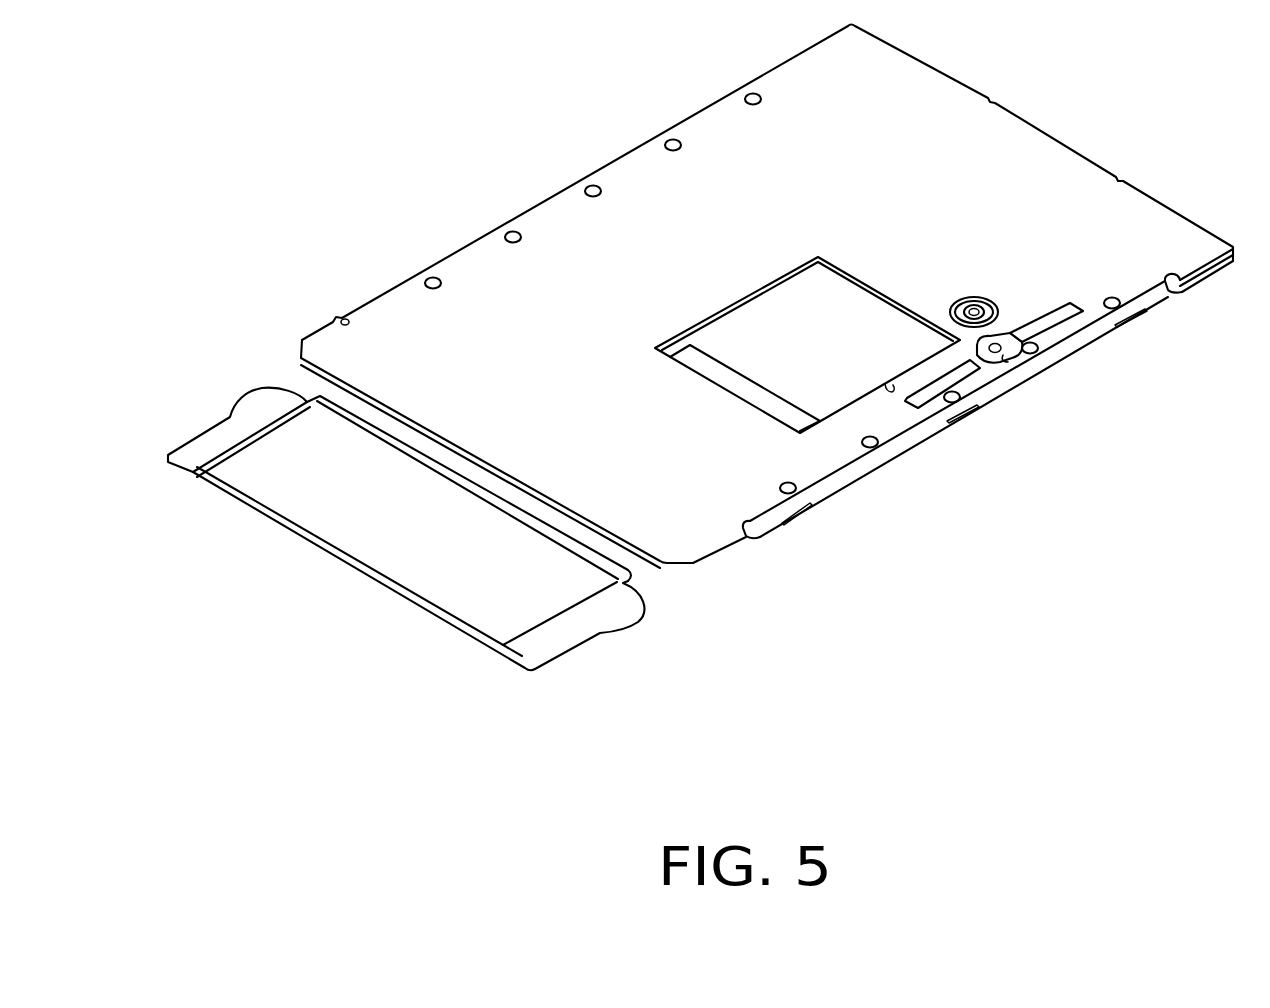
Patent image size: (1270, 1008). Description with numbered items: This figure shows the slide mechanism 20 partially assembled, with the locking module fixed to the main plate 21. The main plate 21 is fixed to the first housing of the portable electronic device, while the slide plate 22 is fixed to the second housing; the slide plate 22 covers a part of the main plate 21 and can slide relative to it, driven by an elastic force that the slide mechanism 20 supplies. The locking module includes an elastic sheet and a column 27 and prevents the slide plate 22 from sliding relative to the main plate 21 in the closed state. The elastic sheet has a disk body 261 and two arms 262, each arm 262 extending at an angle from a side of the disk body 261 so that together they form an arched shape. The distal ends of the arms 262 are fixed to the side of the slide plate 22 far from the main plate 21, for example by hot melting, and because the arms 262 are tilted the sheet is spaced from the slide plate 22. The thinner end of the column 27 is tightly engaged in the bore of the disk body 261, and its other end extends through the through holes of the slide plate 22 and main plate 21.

The slide mechanism 20 is at (415, 180).
The main plate 21 is at (370, 505).
The slide plate 22 is at (408, 345).
The column 27 is at (1000, 360).
The disk body 261 is at (1003, 351).
The arms 262 is at (963, 373).